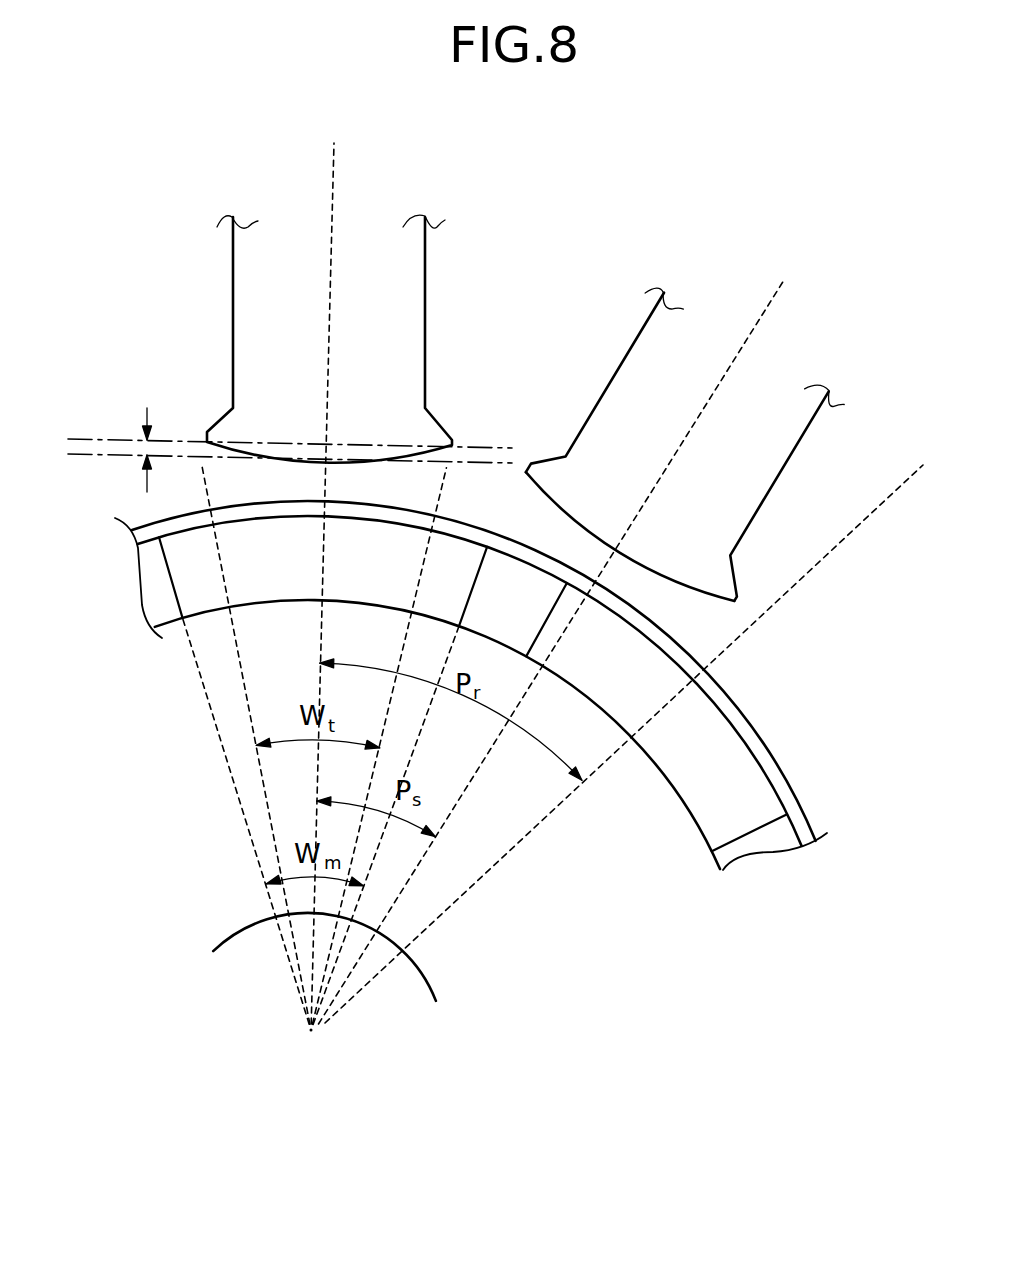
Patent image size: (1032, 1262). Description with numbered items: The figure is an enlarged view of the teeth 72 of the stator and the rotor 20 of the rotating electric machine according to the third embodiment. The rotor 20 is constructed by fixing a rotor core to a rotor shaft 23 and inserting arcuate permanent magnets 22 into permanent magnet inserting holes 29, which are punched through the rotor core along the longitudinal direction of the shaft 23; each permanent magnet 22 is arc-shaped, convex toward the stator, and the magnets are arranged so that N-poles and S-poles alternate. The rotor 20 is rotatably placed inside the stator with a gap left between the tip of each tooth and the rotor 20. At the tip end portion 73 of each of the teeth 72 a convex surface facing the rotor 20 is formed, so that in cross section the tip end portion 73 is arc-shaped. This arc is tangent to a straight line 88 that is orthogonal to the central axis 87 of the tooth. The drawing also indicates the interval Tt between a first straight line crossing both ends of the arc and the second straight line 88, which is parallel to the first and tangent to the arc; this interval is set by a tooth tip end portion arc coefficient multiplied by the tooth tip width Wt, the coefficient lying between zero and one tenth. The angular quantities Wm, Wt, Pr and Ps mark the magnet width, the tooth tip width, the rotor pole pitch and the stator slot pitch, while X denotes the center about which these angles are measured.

The central axis 87 is at (340, 158).
The teeth 72 is at (687, 447).
The tip end portion 73 is at (648, 563).
The rotor 20 is at (760, 737).
The permanent magnet inserting holes 29 is at (662, 773).
The permanent magnets 22 is at (735, 825).
The rotor shaft 23 is at (418, 962).
The rotation center axis X is at (317, 1035).
The straight line 88 is at (78, 462).